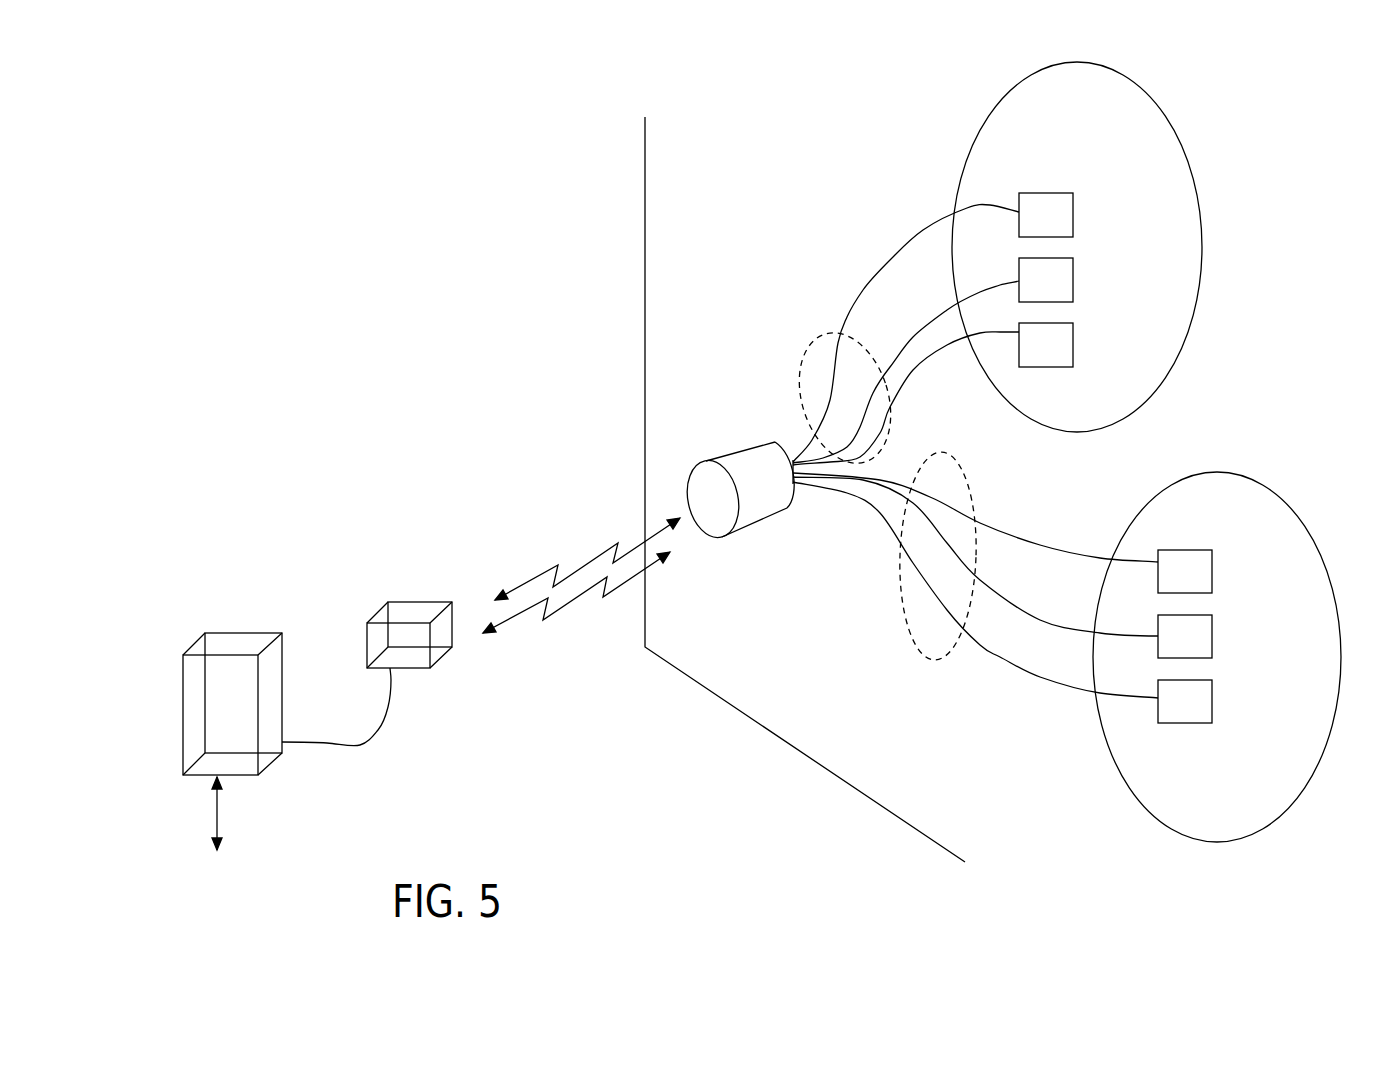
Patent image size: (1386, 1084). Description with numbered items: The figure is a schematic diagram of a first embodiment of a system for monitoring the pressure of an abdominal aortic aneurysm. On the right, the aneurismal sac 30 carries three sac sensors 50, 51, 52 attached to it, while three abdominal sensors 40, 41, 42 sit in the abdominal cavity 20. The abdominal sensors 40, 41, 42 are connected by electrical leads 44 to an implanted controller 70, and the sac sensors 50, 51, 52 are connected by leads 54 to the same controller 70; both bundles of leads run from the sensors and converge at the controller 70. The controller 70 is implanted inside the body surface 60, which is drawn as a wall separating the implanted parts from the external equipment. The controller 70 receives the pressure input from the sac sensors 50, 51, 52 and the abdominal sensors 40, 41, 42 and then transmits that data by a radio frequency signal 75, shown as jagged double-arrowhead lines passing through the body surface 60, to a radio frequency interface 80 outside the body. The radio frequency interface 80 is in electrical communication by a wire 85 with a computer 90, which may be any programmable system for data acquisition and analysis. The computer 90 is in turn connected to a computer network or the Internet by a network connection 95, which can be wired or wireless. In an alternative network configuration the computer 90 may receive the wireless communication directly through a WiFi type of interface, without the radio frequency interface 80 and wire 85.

The abdominal cavity 20 is at (1202, 289).
The aneurismal sac 30 is at (1126, 788).
The abdominal sensor 40 is at (1073, 281).
The abdominal sensor 41 is at (1073, 343).
The abdominal sensor 42 is at (1073, 215).
The electrical leads 44 is at (800, 355).
The sac sensor 50 is at (1212, 637).
The sac sensor 51 is at (1212, 700).
The sac sensor 52 is at (1212, 560).
The leads 54 is at (933, 658).
The body surface 60 is at (645, 343).
The controller 70 is at (752, 450).
The radio frequency signal 75 is at (582, 563).
The radio frequency interface 80 is at (438, 657).
The wire 85 is at (378, 722).
The computer 90 is at (282, 665).
The network connection 95 is at (219, 807).